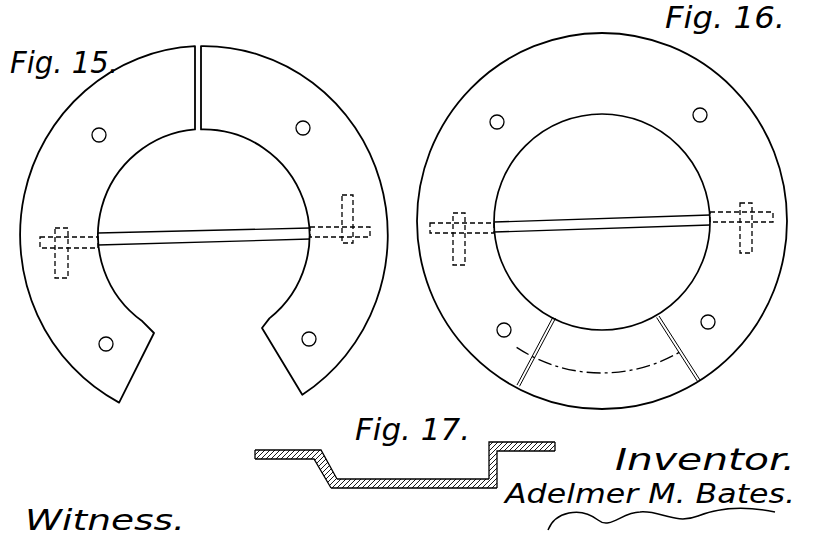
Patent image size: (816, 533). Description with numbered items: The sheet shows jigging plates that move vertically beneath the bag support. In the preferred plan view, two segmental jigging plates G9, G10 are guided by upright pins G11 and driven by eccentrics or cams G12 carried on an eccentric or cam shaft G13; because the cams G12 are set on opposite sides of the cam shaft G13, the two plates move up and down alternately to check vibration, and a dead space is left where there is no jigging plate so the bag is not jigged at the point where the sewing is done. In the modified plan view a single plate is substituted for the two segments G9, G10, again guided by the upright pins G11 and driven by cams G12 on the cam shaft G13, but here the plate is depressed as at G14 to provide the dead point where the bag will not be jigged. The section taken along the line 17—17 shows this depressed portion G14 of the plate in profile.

In FIG. 15, the segmental jigging plate G9 is at (107, 224).
In FIG. 15, the segmental jigging plate G10 is at (294, 220).
In FIG. 15, the upright pins G11 is at (103, 130).
In FIG. 16, the upright pins G11 is at (505, 121).
In FIG. 15, the eccentrics or cams G12 is at (62, 278).
In FIG. 16, the eccentrics or cams G12 is at (461, 213).
In FIG. 15, the eccentric or cam shaft G13 is at (257, 231).
In FIG. 16, the eccentric or cam shaft G13 is at (602, 221).
In FIG. 17, the eccentric or cam shaft G13 is at (268, 461).
In FIG. 16, the depressed portion of jigging plate G14 is at (603, 335).
In FIG. 17, the depressed portion of jigging plate G14 is at (385, 490).
In FIG. 16, the section line 17 is at (527, 349).